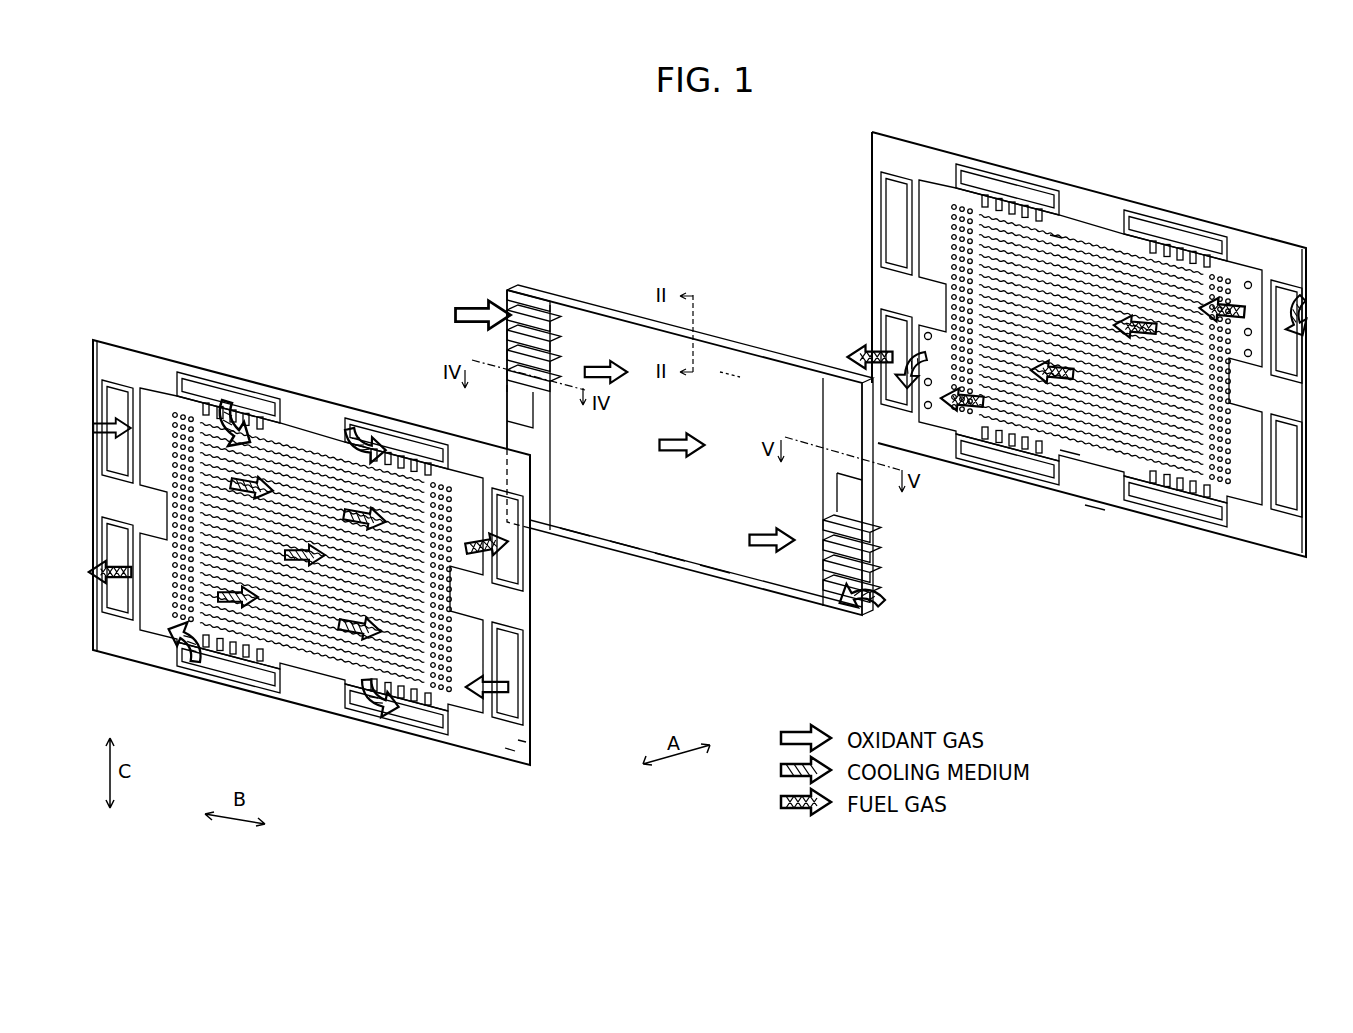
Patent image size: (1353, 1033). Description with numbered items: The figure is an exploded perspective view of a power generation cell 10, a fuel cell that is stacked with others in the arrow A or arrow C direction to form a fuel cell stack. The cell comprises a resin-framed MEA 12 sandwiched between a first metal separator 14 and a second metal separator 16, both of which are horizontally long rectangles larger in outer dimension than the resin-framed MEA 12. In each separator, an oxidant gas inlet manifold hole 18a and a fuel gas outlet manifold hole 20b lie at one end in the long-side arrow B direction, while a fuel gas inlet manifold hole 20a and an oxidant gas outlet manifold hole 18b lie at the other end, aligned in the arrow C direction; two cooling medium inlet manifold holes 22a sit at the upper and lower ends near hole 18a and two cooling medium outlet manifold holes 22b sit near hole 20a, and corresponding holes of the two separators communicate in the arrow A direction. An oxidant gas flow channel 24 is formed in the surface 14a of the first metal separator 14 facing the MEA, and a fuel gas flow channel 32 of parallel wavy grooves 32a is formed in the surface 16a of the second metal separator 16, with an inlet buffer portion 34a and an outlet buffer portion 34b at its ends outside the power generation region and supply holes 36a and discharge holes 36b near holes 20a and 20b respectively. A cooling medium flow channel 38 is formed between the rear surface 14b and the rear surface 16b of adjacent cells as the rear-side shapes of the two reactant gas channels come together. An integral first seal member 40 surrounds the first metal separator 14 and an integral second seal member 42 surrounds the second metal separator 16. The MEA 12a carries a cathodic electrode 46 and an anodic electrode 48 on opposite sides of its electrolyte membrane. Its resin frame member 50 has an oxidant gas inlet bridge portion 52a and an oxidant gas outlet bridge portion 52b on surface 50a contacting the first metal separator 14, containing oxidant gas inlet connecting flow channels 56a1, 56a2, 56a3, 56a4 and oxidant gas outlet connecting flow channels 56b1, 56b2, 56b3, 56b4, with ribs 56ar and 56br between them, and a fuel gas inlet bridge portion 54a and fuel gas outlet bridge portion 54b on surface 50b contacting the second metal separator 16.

The power generation cell 10 is at (313, 237).
The resin-framed MEA 12 is at (504, 283).
The MEA 12a is at (730, 567).
The first metal separator 14 is at (98, 332).
The surface of the first metal separator 14a is at (525, 748).
The surface of the first metal separator 14b is at (512, 750).
The second metal separator 16 is at (869, 124).
The surface of the second metal separator 16a is at (1075, 445).
The surface of the second metal separator 16b is at (1093, 505).
The oxidant gas inlet manifold hole 18a is at (895, 198).
The oxidant gas outlet manifold hole 18b is at (512, 702).
The fuel gas inlet manifold hole 20a is at (513, 570).
The fuel gas outlet manifold hole 20b is at (122, 600).
The cooling medium inlet manifold hole 22a is at (977, 127).
The cooling medium outlet manifold hole 22b is at (1180, 187).
The oxidant gas flow channel 24 is at (322, 620).
The fuel gas flow channel 32 is at (1032, 239).
The wavy grooves 32a is at (1060, 238).
The inlet buffer portion 34a is at (1226, 492).
The outlet buffer portion 34b is at (950, 258).
The supply holes 36a is at (1248, 282).
The discharge holes 36b is at (924, 333).
The cooling medium flow channel 38 is at (300, 650).
The first seal member 40 is at (323, 393).
The second seal member 42 is at (1088, 202).
The cathodic electrode 46 is at (668, 558).
The anodic electrode 48 is at (721, 370).
The resin frame member 50 is at (687, 584).
The surface of the resin frame member 50a is at (587, 541).
The surface of the resin frame member 50b is at (625, 556).
The oxidant gas inlet bridge portion 52a is at (542, 336).
The oxidant gas outlet bridge portion 52b is at (847, 572).
The fuel gas inlet bridge portion 54a is at (855, 415).
The fuel gas outlet bridge portion 54b is at (528, 437).
The oxidant gas inlet connecting flow channel 56a1 is at (528, 383).
The oxidant gas inlet connecting flow channel 56a2 is at (540, 368).
The oxidant gas inlet connecting flow channel 56a3 is at (548, 332).
The oxidant gas inlet connecting flow channel 56a4 is at (539, 305).
The inlet connection channel rib 56ar is at (515, 300).
The oxidant gas outlet connecting flow channel 56b1 is at (838, 598).
The oxidant gas outlet connecting flow channel 56b2 is at (826, 576).
The oxidant gas outlet connecting flow channel 56b3 is at (826, 548).
The oxidant gas outlet connecting flow channel 56b4 is at (825, 525).
The outlet connection channel rib 56br is at (872, 586).